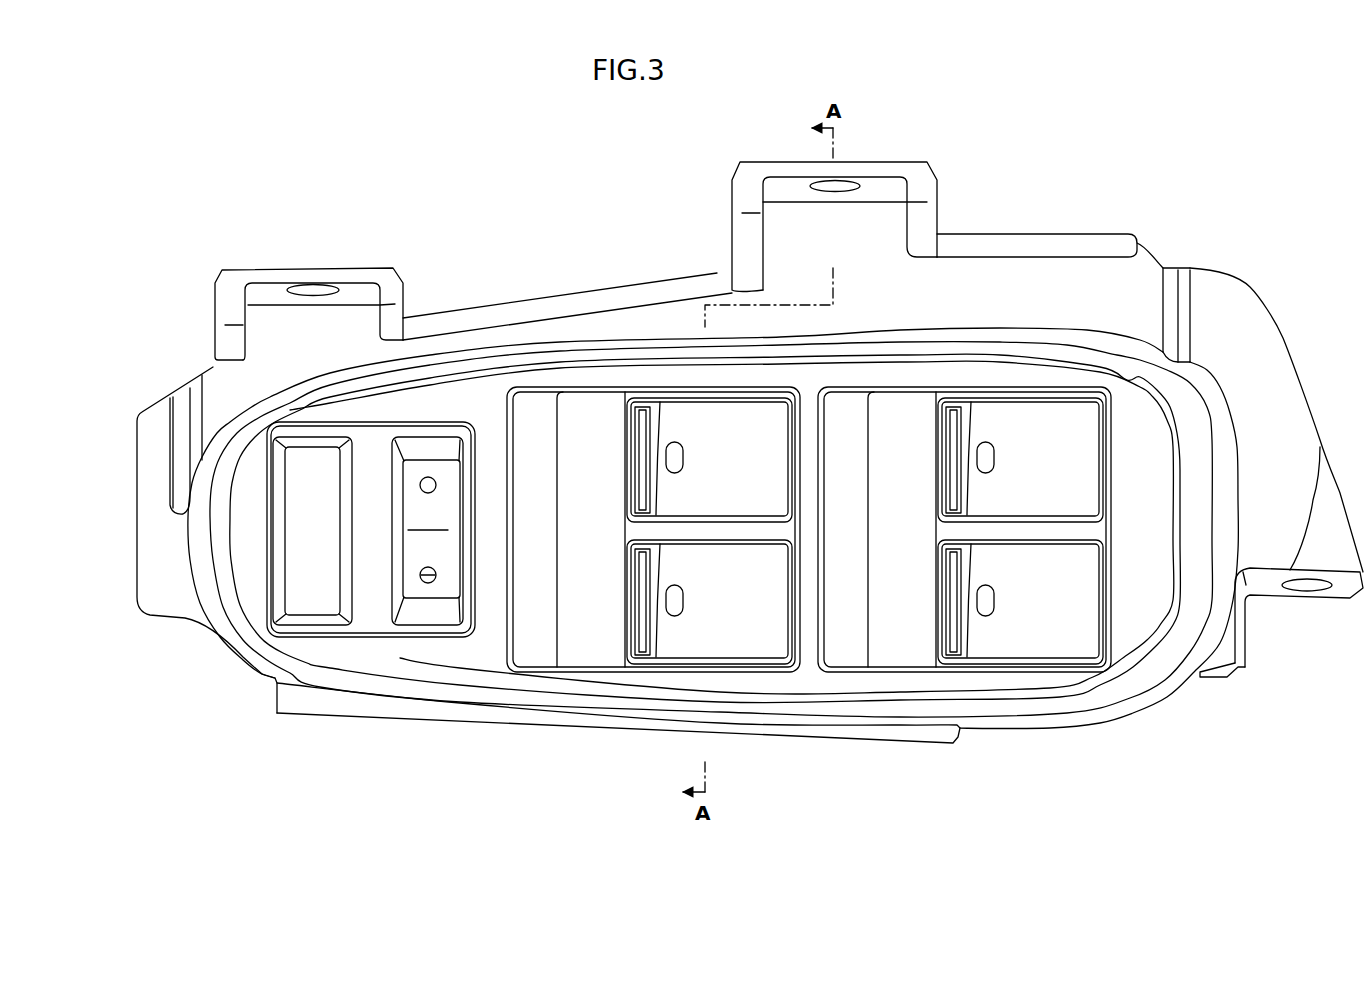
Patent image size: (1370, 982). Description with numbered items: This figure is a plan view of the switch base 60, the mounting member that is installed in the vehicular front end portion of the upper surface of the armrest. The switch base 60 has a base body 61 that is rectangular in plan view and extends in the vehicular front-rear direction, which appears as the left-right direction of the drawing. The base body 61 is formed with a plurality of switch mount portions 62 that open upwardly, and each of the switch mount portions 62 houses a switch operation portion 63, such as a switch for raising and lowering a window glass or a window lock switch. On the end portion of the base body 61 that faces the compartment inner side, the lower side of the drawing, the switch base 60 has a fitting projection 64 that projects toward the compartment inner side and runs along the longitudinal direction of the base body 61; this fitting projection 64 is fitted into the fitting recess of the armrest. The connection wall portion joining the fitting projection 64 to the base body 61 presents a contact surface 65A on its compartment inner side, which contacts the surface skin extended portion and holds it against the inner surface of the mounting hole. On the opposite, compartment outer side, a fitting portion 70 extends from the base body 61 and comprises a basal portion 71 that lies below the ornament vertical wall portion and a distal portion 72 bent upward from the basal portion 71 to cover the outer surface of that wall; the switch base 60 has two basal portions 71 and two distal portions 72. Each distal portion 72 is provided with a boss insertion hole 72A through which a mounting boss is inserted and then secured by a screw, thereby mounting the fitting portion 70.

The switch base 60 is at (184, 352).
The base body 61 is at (1145, 600).
The switch mount portions 62 is at (363, 613).
The switch operation portion 63 is at (667, 485).
The fitting projection 64 is at (630, 732).
The contact surface 65A is at (408, 702).
The fitting portion 70 is at (238, 256).
The basal portion 71 is at (883, 293).
The distal portion 72 is at (366, 283).
The boss insertion hole 72A is at (313, 286).